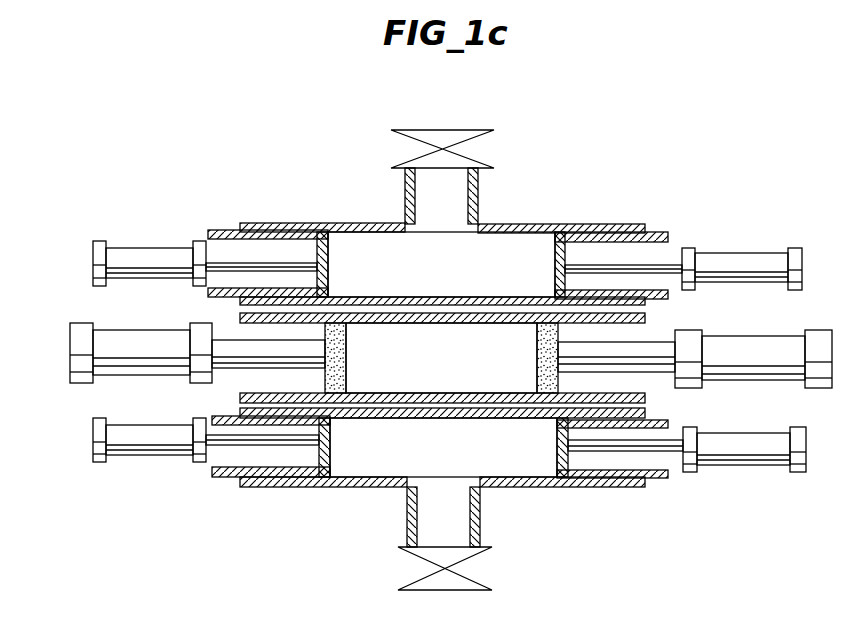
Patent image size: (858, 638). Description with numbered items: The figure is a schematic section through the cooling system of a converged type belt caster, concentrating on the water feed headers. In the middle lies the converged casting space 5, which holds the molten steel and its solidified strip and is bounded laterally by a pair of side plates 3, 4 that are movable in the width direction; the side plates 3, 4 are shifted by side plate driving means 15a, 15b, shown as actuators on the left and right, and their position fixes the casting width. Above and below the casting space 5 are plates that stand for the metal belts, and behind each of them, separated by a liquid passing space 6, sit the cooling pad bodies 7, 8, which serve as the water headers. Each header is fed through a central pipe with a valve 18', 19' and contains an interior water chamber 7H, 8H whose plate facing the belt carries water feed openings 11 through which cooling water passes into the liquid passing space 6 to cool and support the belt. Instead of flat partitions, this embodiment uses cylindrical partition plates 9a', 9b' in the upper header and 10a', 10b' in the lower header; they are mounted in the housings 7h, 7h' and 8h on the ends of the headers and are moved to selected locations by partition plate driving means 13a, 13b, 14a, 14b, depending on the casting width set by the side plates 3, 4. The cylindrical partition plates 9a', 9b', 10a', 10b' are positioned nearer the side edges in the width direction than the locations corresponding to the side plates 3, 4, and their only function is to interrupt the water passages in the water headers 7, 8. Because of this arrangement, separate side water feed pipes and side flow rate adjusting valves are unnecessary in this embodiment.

The side plate 3 is at (547, 330).
The side plate 4 is at (345, 398).
The casting space 5 is at (446, 375).
The liquid passing space 6 is at (242, 308).
The cooling pad body 7 is at (350, 223).
The water header chamber 7H is at (448, 270).
The left housing of upper water header 7h is at (268, 241).
The right housing of upper water header 7h' is at (615, 242).
The cooling pad body 8 is at (542, 487).
The water header chamber 8H is at (458, 457).
The left housing of lower water header 8h is at (212, 464).
The cylindrical partition plate 9a' is at (300, 241).
The cylindrical partition plate 9b' is at (582, 241).
The cylindrical partition plate 10a' is at (287, 481).
The cylindrical partition plate 10b' is at (596, 482).
The water feed opening 11 is at (368, 297).
The partition plate driving means 13a is at (145, 247).
The partition plate driving means 13b is at (748, 262).
The partition plate driving means 14a is at (148, 445).
The partition plate driving means 14b is at (757, 452).
The side plate driving means 15a is at (152, 362).
The side plate driving means 15b is at (752, 350).
The water feed valve 18' is at (442, 132).
The water feed valve 19' is at (445, 573).